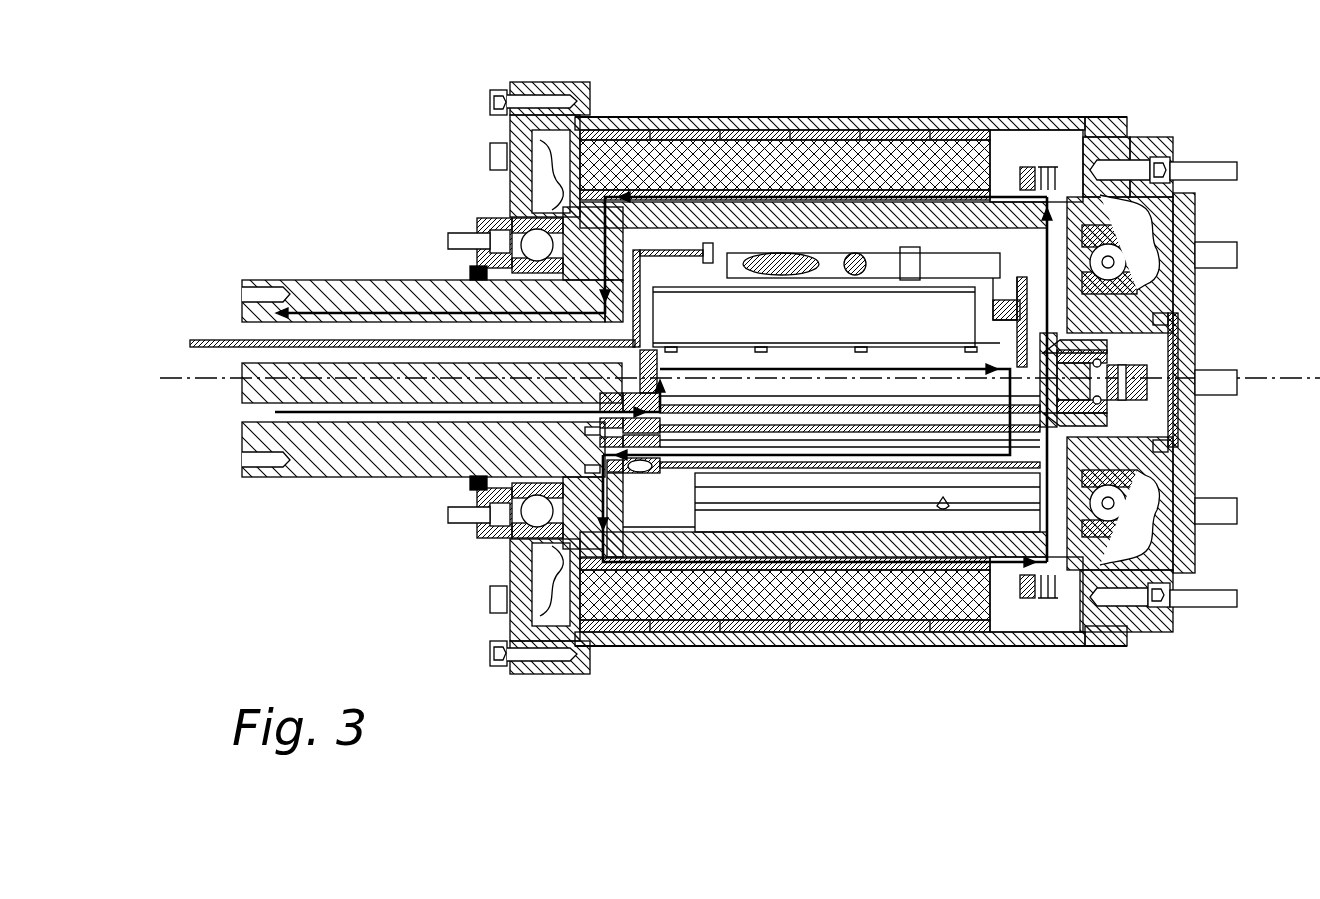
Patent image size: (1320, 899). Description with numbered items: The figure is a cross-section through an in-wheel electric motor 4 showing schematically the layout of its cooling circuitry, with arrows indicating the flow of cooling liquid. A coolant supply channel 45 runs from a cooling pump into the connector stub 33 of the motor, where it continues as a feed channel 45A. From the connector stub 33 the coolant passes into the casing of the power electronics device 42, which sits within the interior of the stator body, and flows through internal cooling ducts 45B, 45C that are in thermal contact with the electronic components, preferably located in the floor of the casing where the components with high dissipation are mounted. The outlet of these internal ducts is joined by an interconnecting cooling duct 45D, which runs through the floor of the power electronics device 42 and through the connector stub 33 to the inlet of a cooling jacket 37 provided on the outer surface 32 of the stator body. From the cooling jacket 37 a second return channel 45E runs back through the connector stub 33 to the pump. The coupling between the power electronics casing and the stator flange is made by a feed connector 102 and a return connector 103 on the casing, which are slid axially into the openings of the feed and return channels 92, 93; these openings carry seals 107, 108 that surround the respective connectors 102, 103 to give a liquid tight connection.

The in-wheel electric motor 4 is at (1082, 128).
The outer surface of the stator body 32 is at (915, 590).
The connector stub 33 is at (307, 447).
The cooling jacket 37 is at (883, 128).
The power electronics device 42 is at (850, 300).
The coolant supply channel 45 is at (263, 412).
The feed channel 45A is at (347, 410).
The internal cooling duct 45B is at (670, 395).
The internal cooling duct 45C is at (803, 367).
The interconnecting cooling duct 45D is at (1075, 460).
The return channel 45E is at (603, 273).
The feed channel opening 92 is at (597, 458).
The return channel opening 93 is at (597, 470).
The feed connector 102 is at (597, 411).
The return connector 103 is at (646, 455).
The seal 107 is at (597, 436).
The seal 108 is at (657, 448).